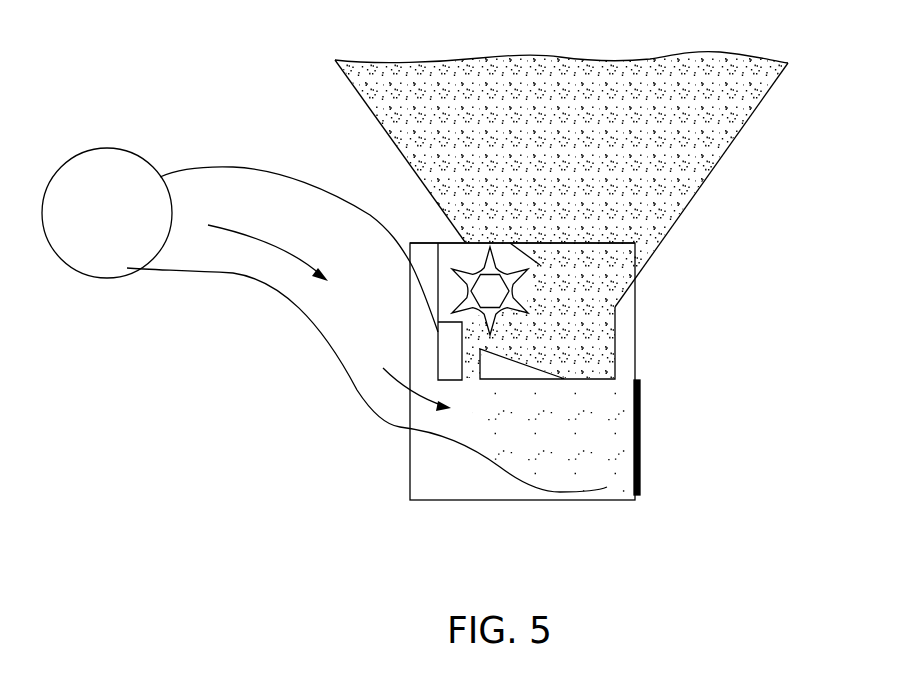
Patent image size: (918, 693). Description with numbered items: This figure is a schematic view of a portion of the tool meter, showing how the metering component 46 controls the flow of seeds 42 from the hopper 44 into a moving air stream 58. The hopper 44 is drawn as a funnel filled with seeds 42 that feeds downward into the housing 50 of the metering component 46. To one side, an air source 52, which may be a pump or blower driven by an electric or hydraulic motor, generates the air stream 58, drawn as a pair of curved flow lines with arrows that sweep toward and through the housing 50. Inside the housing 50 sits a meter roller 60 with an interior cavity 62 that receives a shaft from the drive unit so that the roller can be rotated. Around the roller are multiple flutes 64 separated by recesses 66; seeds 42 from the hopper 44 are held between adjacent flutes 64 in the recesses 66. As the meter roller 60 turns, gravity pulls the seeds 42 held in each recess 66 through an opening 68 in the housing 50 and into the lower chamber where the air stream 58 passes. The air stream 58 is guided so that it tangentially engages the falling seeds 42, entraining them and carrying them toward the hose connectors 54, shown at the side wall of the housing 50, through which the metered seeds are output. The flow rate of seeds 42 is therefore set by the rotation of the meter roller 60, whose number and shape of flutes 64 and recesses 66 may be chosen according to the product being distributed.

The seeds 42 is at (713, 146).
The hopper 44 is at (355, 90).
The metering component 46 is at (424, 237).
The housing 50 is at (634, 333).
The air source 52 is at (106, 149).
The hose connectors 54 is at (640, 438).
The air stream 58 is at (268, 243).
The meter roller 60 is at (540, 292).
The interior cavity 62 is at (480, 301).
The flutes 64 is at (462, 266).
The recesses 66 is at (508, 263).
The opening 68 is at (476, 372).